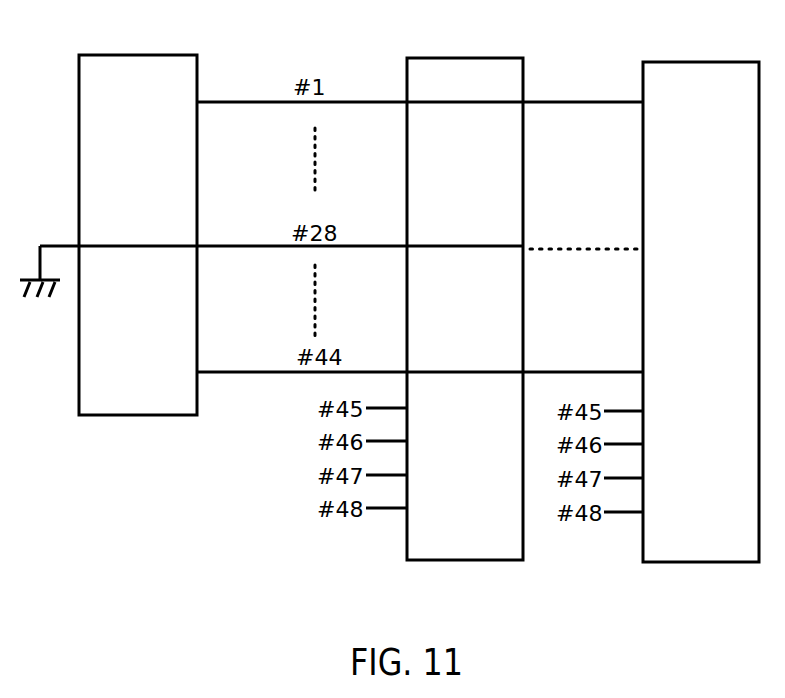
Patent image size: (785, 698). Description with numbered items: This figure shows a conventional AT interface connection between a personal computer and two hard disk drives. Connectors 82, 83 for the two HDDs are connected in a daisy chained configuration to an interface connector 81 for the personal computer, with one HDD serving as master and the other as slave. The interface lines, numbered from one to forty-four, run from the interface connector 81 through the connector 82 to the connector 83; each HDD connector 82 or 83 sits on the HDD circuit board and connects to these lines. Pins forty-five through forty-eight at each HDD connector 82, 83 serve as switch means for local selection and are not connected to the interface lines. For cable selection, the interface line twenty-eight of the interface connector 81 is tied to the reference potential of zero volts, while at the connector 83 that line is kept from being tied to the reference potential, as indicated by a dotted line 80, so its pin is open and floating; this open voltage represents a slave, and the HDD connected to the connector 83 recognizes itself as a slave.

The dotted line 80 is at (565, 250).
The interface connector 81 is at (148, 62).
The connector 82 is at (470, 66).
The connector 83 is at (706, 68).